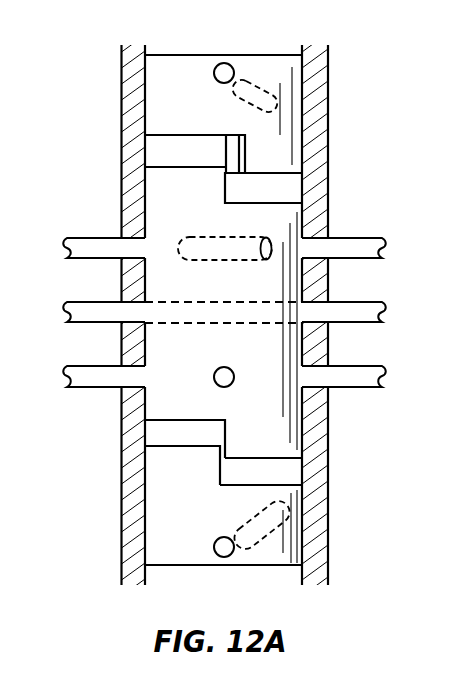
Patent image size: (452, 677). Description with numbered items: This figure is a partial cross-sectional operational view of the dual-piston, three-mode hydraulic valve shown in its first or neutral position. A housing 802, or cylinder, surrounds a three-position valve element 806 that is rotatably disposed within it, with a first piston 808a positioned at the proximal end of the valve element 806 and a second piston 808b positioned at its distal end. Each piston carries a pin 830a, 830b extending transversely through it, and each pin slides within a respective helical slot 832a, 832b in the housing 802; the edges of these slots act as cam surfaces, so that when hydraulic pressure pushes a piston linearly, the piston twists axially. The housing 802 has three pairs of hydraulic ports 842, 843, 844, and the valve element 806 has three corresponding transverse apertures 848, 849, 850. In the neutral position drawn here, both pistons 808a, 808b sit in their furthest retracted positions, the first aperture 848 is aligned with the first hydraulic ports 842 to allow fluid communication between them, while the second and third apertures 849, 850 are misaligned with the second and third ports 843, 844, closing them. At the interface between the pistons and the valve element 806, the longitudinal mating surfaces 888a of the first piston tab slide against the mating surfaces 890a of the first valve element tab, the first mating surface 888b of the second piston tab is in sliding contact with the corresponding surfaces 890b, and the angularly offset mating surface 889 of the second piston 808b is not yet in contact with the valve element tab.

The housing 802 is at (133, 108).
The three-position valve element 806 is at (238, 439).
The first piston 808a is at (167, 533).
The second piston 808b is at (163, 82).
The pin 830a is at (224, 557).
The pin 830b is at (224, 62).
The helical slot 832a is at (300, 543).
The helical slot 832b is at (250, 77).
The first pair of hydraulic ports 842 is at (98, 308).
The second pair of hydraulic ports 843 is at (93, 375).
The third pair of hydraulic ports 844 is at (92, 243).
The first valve aperture 848 is at (228, 325).
The second valve aperture 849 is at (207, 377).
The third valve aperture 850 is at (233, 260).
The longitudinal mating surfaces 888a is at (220, 467).
The first longitudinal mating surface 888b is at (225, 153).
The angularly offset mating surface 889 is at (247, 152).
The longitudinal mating surfaces 890a is at (225, 431).
The longitudinal mating surfaces 890b is at (213, 190).